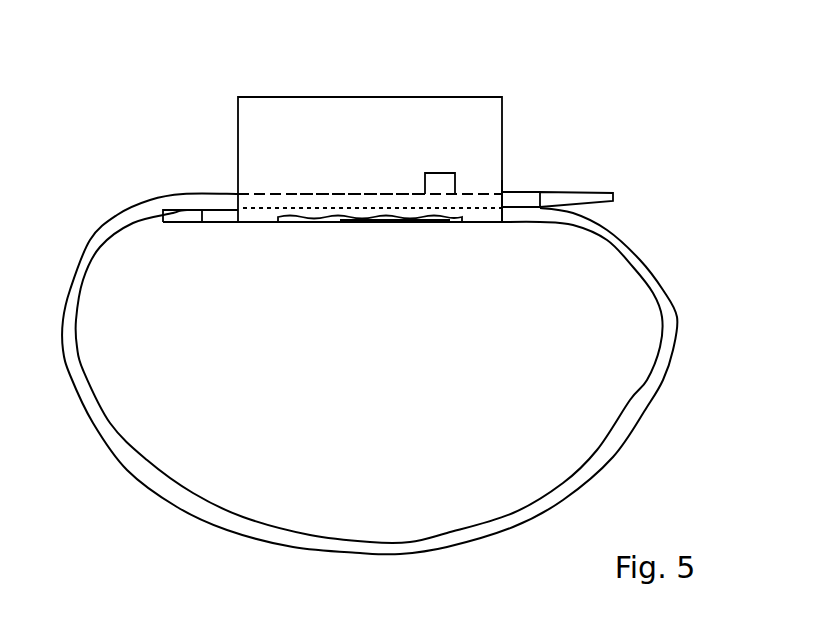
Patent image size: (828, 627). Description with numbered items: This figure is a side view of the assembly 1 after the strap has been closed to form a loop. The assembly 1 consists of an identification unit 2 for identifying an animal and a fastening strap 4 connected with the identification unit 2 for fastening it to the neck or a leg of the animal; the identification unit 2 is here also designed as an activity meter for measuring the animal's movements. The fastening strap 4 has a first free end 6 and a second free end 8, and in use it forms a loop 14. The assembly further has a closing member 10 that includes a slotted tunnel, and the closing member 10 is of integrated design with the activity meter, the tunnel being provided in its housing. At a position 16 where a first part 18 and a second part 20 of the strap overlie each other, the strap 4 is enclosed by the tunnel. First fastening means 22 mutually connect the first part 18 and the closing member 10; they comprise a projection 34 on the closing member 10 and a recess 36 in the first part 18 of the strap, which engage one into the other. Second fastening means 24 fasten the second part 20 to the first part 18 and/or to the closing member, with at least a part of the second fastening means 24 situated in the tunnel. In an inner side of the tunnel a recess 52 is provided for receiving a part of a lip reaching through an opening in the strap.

The assembly 1 is at (719, 430).
The identification unit 2 is at (483, 108).
The fastening strap 4 is at (677, 317).
The first free end 6 is at (182, 222).
The second free end 8 is at (613, 197).
The closing member 10 is at (495, 222).
The loop 14 is at (362, 446).
The position 16 is at (375, 246).
The first part 18 is at (259, 222).
The second part 20 is at (260, 190).
The first fastening means 22 is at (425, 246).
The second fastening means 24 is at (359, 186).
The projection 34 is at (305, 222).
The recess 36 is at (450, 222).
The recess 52 is at (438, 183).